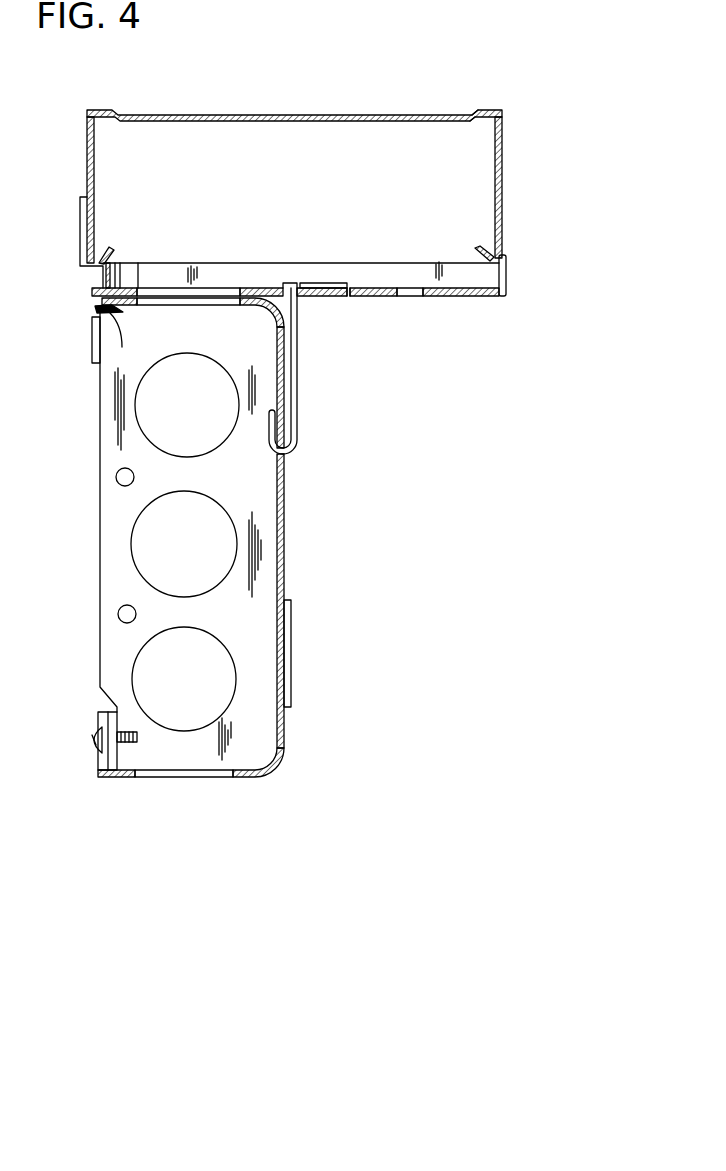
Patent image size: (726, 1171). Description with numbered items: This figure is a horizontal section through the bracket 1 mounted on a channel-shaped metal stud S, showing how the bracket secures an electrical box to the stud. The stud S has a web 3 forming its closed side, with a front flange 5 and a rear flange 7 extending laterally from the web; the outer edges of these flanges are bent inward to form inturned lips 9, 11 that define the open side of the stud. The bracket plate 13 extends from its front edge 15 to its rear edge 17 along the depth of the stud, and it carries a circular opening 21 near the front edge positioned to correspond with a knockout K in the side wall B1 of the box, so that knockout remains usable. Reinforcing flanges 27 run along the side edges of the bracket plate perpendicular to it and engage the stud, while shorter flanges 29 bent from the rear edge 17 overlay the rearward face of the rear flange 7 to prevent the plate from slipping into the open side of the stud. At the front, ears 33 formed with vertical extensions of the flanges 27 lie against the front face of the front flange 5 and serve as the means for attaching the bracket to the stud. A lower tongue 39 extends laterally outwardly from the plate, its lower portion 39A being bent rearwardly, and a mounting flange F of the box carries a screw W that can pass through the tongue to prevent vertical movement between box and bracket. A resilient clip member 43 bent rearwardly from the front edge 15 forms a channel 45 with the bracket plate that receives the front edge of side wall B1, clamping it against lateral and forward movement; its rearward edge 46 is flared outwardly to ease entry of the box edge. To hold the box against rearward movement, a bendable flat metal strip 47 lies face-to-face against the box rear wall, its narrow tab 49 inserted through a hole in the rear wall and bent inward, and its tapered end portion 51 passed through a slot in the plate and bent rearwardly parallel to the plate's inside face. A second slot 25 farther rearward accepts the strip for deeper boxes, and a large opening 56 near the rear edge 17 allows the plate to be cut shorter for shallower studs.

The bracket 1 is at (414, 431).
The web 3 is at (273, 114).
The front flange 5 is at (87, 167).
The rear flange 7 is at (503, 163).
The inturned lip 9 is at (115, 253).
The inturned lip 11 is at (487, 243).
The bracket plate 13 is at (354, 270).
The front edge 15 is at (95, 292).
The rear edge 17 is at (507, 288).
The circular opening 21 is at (199, 283).
The second vertical slot 25 is at (357, 287).
The reinforcing flanges 27 is at (457, 275).
The flanges 29 is at (507, 272).
The ears 33 is at (80, 225).
The lower tongue 39 is at (90, 346).
The lower portion of lower tongue 39A is at (110, 318).
The clip member 43 is at (113, 318).
The channel 45 is at (93, 312).
The rearward edge of clip member 46 is at (113, 310).
The bendable flat metal strip 47 is at (308, 422).
The tab 49 is at (271, 442).
The tapered end portion 51 is at (330, 283).
The opening 56 is at (420, 297).
The stud S is at (488, 108).
The side wall B1 is at (248, 304).
The knockouts K is at (192, 302).
The mounting flange F is at (100, 717).
The screw W is at (93, 748).